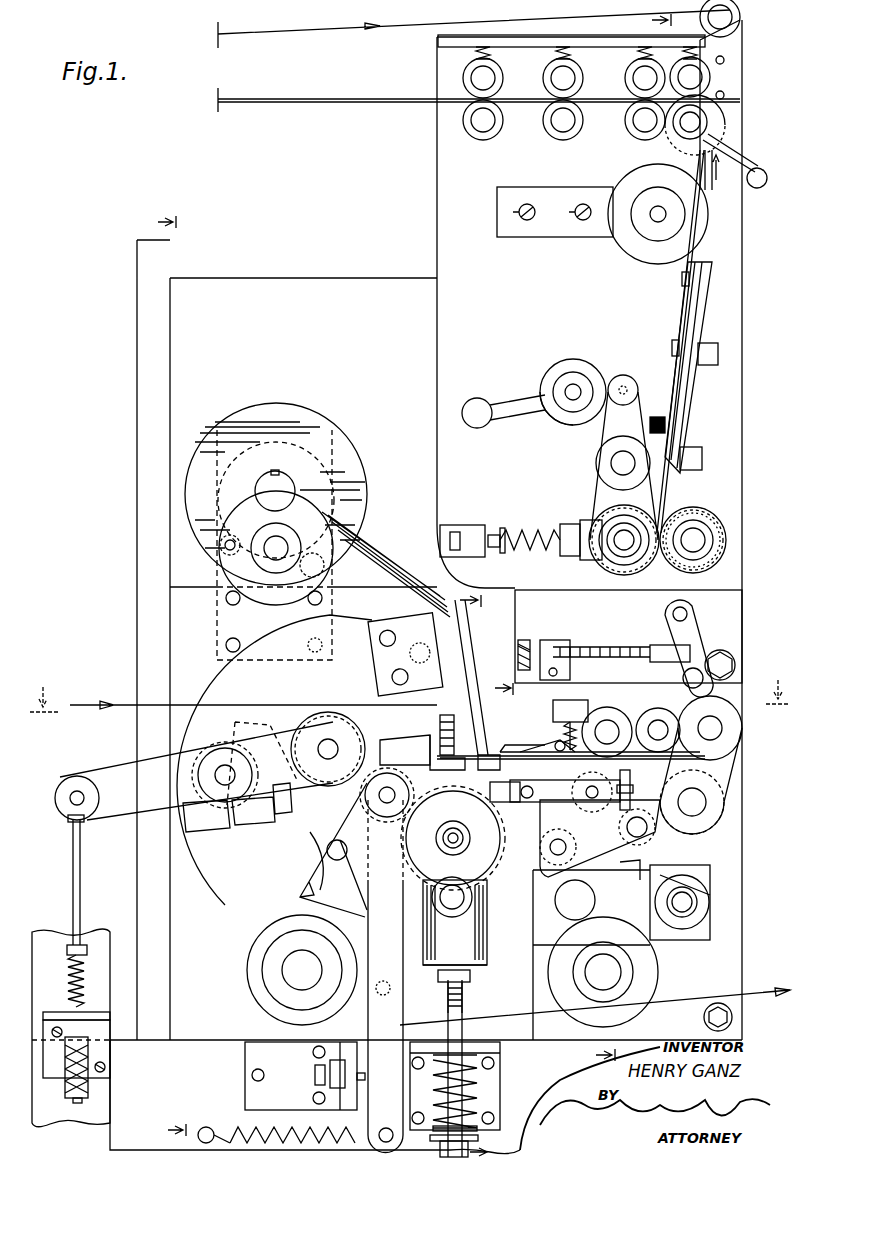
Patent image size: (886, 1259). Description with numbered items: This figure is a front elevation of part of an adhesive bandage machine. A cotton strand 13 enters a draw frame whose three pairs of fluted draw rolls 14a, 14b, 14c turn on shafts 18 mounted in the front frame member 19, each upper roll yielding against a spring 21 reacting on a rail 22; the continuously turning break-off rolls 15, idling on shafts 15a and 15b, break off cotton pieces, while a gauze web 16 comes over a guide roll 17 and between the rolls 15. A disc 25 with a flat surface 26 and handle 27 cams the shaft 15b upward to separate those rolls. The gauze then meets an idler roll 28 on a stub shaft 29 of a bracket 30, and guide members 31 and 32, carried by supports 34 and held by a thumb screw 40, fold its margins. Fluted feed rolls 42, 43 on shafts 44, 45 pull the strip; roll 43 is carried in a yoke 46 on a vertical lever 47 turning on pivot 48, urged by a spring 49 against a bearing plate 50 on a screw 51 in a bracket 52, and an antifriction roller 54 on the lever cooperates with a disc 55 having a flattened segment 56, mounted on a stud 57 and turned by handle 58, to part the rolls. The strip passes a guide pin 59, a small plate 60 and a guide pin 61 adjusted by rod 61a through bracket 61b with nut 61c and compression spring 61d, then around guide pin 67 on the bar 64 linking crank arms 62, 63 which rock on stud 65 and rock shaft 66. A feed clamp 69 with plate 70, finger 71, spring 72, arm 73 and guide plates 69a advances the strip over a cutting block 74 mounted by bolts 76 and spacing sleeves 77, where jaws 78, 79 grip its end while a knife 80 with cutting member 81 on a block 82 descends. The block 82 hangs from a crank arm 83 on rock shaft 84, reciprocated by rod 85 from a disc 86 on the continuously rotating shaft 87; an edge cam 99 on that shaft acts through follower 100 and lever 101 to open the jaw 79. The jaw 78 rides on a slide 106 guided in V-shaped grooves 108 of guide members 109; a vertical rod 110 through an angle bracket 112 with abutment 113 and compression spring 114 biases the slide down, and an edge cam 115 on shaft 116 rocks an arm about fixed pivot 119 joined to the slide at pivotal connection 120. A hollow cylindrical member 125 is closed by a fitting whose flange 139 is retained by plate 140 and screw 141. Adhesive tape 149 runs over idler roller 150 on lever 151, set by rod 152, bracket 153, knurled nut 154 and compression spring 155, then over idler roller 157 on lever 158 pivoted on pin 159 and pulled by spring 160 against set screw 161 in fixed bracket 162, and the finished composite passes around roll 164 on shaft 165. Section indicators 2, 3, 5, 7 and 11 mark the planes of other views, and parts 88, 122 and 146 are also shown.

The section line 2- 2 is at (410, 705).
The section line 3- 3 is at (178, 678).
The section line 5- 5 is at (640, 539).
The section line 7- 7 is at (511, 690).
The section line 11- 11 is at (484, 878).
The continuous strand 13 is at (275, 102).
The draw rolls 14a is at (468, 146).
The draw rolls 14b is at (553, 146).
The draw rolls 14c is at (632, 146).
The break-off rolls 15 is at (722, 62).
The short shaft 15a is at (690, 122).
The fore and aft shaft 15b is at (690, 77).
The continuous web 16 is at (262, 36).
The guide roll 17 is at (740, 17).
The fore and aft parallel shafts 18 is at (483, 78).
The front machine frame member 19 is at (437, 236).
The spring 21 is at (490, 50).
The overlying rail 22 is at (590, 37).
The disc 25 is at (718, 128).
The flat surface 26 is at (705, 105).
The handle 27 is at (760, 170).
The idler roll 28 is at (640, 258).
The stub shaft 29 is at (650, 220).
The bracket 30 is at (545, 237).
The guide member 31 is at (685, 296).
The guide member 32 is at (680, 400).
The supports 34 is at (708, 345).
The thumb screw 40 is at (650, 425).
The fluted roll 42 is at (710, 570).
The fluted roll 43 is at (615, 568).
The shaft 44 is at (695, 525).
The shaft 45 is at (625, 475).
The yoke 46 is at (560, 522).
The vertical lever 47 is at (600, 430).
The pivot 48 is at (615, 462).
The spring 49 is at (535, 557).
The bearing plate 50 is at (505, 528).
The screw 51 is at (495, 558).
The bracket 52 is at (468, 518).
The antifriction roller 54 is at (626, 375).
The disc 55 is at (543, 376).
The flattened segment 56 is at (600, 378).
The stud 57 is at (574, 372).
The handle 58 is at (512, 405).
The guide pin 59 is at (688, 614).
The small plate 60 is at (700, 628).
The guide pin 61 is at (683, 678).
The rod 61a is at (585, 645).
The bracket 61b is at (548, 642).
The nut 61c is at (525, 638).
The compression spring 61d is at (640, 645).
The crank arm 62 is at (725, 768).
The crank arm 63 is at (636, 784).
The bar 64 is at (625, 712).
The stud 65 is at (706, 802).
The rock shaft 66 is at (635, 788).
The guide pin 67 is at (660, 715).
The feed clamp 69 is at (540, 730).
The parallel plates 69a is at (546, 740).
The plate 70 is at (605, 762).
The finger 71 is at (555, 762).
The spring 72 is at (552, 716).
The arm 73 is at (575, 700).
The cutting block 74 is at (505, 782).
The bolts 76 is at (566, 847).
The spacing sleeves 77 is at (625, 826).
The jaw 78 is at (430, 740).
The jaw 79 is at (405, 745).
The knife 80 is at (472, 720).
The rail foot 81 is at (475, 748).
The block 82 is at (415, 612).
The crank arm 83 is at (225, 675).
The rock shaft 84 is at (226, 765).
The rod 85 is at (360, 565).
The disc 86 is at (258, 403).
The continuously rotating shaft 87 is at (262, 486).
The link 88 is at (250, 722).
The edge cam 99 is at (320, 450).
The follower 100 is at (257, 503).
The lever 101 is at (217, 575).
The slide 106 is at (470, 997).
The V-shaped grooves 108 is at (410, 1000).
The guide members 109 is at (410, 1012).
The vertical rod 110 is at (448, 1027).
The angle bracket 112 is at (492, 1080).
The abutment 113 is at (482, 1128).
The compression spring 114 is at (470, 1088).
The edge cam 115 is at (650, 990).
The shaft 116 is at (622, 972).
The fixed pivot 119 is at (700, 900).
The pivotal connection 120 is at (425, 925).
The rack 122 is at (452, 721).
The hollow cylindrical member 125 is at (430, 893).
The flange 139 is at (400, 858).
The plate 140 is at (455, 954).
The screw 141 is at (453, 825).
The cam shaft 146 is at (462, 832).
The adhesive tape 149 is at (80, 703).
The idler roller 150 is at (325, 712).
The lever 151 is at (100, 770).
The rod 152 is at (82, 878).
The bracket 153 is at (105, 1012).
The knurled nut 154 is at (90, 1092).
The compression spring 155 is at (85, 955).
The idler roller 157 is at (372, 805).
The lever 158 is at (352, 900).
The pin 159 is at (330, 842).
The spring 160 is at (285, 1122).
The set screw 161 is at (365, 1078).
The fixed bracket 162 is at (300, 1060).
The roll 164 is at (285, 1003).
The shaft 165 is at (300, 972).